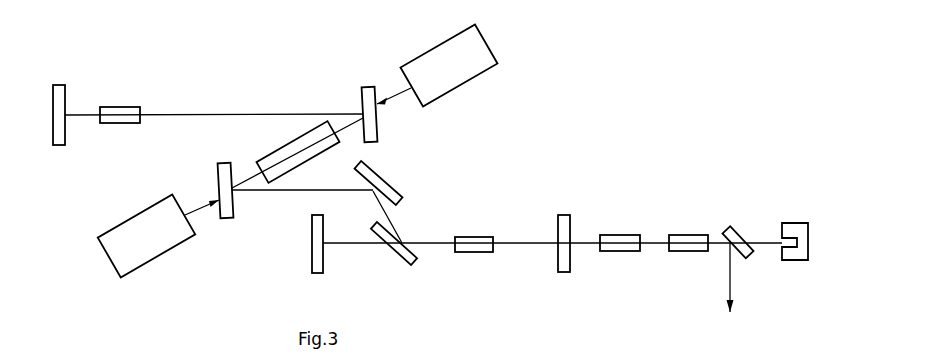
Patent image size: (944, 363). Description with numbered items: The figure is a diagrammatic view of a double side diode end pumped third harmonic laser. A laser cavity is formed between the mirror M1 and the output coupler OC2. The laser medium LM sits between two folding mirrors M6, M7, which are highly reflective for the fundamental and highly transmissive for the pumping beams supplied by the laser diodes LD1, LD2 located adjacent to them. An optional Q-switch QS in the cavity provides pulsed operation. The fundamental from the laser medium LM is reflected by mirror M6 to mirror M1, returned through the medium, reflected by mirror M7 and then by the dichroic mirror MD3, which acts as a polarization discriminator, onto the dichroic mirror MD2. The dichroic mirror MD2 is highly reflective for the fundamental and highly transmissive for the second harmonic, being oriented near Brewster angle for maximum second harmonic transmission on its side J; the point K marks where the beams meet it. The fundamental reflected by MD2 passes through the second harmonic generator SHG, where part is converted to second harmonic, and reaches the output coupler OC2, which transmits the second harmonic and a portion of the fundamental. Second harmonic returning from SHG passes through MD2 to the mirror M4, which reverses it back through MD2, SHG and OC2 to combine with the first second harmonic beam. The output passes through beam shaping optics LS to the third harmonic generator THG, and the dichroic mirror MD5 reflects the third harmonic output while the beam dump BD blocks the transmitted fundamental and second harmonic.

The mirror M1 is at (60, 106).
The Q-switch QS is at (130, 92).
The laser medium LM is at (297, 152).
The folding mirror M6 is at (368, 104).
The folding mirror M7 is at (223, 180).
The laser diode LD1 is at (447, 66).
The laser diode LD2 is at (150, 236).
The dichroic mirror MD3 is at (380, 173).
The mirror M4 is at (313, 255).
The dichroic mirror MD2 is at (407, 256).
The side of mirror MD2 J is at (384, 265).
The point K is at (410, 235).
The second harmonic generator crystal SHG is at (476, 233).
The output coupler OC2 is at (570, 233).
The beam shaping optics LS is at (620, 231).
The third harmonic generator THG is at (688, 231).
The dichroic mirror MD5 is at (723, 271).
The beam dump BD is at (795, 231).